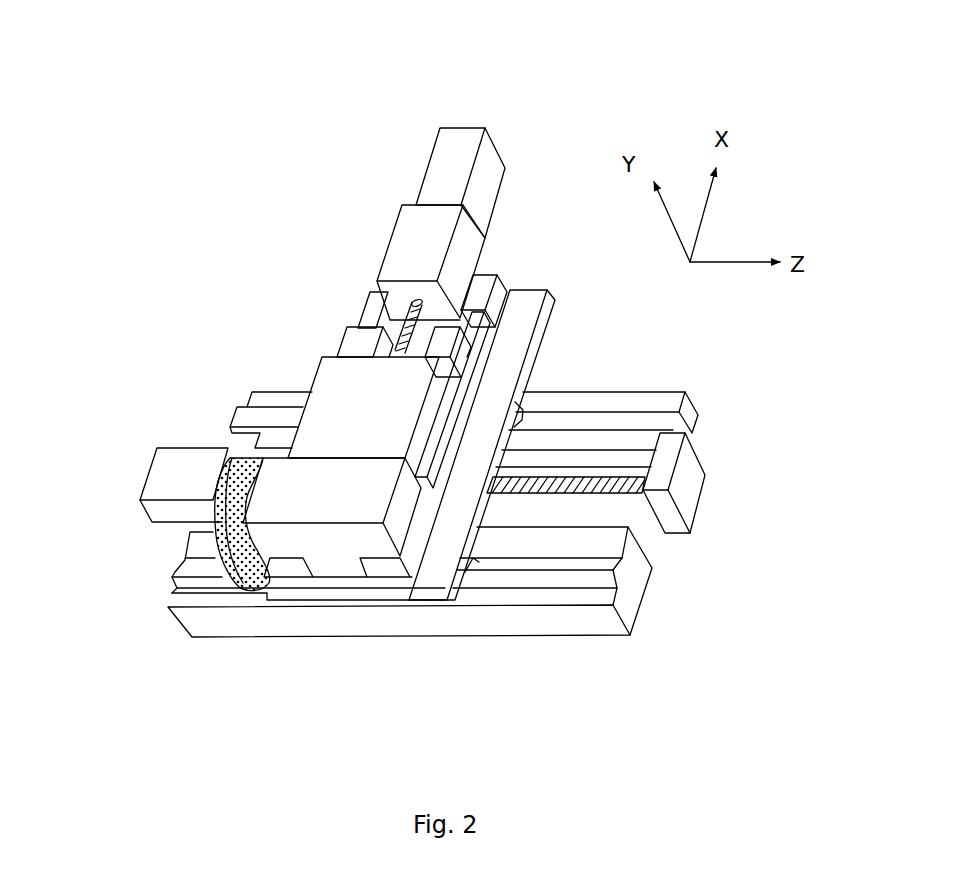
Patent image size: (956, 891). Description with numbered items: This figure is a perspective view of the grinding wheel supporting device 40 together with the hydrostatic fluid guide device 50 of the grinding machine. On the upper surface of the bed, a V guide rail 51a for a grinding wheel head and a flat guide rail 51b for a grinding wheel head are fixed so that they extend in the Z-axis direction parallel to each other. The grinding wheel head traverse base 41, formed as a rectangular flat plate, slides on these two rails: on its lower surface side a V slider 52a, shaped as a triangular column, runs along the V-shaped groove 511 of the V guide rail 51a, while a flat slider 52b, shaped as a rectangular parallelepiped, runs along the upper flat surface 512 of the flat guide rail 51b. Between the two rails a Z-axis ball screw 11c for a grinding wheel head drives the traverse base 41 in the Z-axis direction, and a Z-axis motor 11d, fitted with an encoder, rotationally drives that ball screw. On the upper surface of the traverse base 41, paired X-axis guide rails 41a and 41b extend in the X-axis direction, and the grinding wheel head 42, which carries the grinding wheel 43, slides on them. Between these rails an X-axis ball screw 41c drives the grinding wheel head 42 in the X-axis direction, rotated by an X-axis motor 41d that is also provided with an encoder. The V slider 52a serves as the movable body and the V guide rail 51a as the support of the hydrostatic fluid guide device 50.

The grinding wheel supporting device 40 is at (234, 208).
The grinding wheel head traverse base 41 is at (533, 298).
The X-axis guide rail for a grinding wheel head 41a is at (355, 335).
The X-axis guide rail for a grinding wheel head 41b is at (492, 275).
The X-axis ball screw for a grinding wheel head 41c is at (402, 287).
The X-axis motor for a grinding wheel head 41d is at (460, 128).
The grinding wheel head 42 is at (340, 382).
The grinding wheel 43 is at (237, 470).
The Z-axis motor for a grinding wheel head 11d is at (172, 470).
The Z-axis ball screw for a grinding wheel head 11c is at (617, 487).
The hydrostatic fluid guide device 50 is at (630, 688).
The V guide rail for a grinding wheel head 51a is at (472, 627).
The flat guide rail for a grinding wheel head 51b is at (700, 414).
The groove 511 is at (608, 552).
The upper flat surface 512 is at (630, 417).
The V slider 52a is at (473, 558).
The flat slider 52b is at (518, 413).